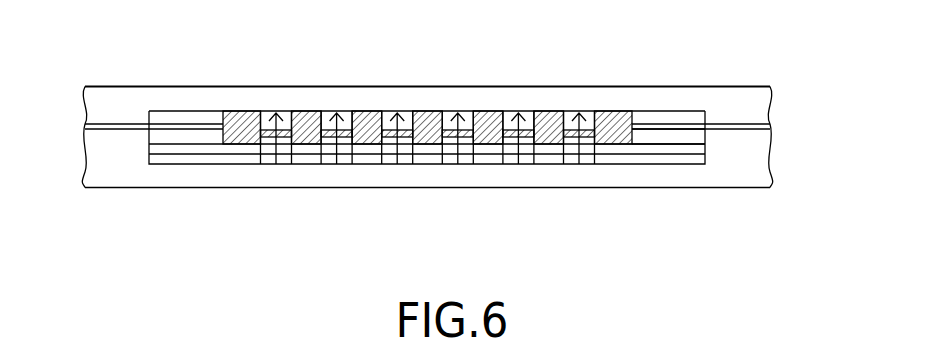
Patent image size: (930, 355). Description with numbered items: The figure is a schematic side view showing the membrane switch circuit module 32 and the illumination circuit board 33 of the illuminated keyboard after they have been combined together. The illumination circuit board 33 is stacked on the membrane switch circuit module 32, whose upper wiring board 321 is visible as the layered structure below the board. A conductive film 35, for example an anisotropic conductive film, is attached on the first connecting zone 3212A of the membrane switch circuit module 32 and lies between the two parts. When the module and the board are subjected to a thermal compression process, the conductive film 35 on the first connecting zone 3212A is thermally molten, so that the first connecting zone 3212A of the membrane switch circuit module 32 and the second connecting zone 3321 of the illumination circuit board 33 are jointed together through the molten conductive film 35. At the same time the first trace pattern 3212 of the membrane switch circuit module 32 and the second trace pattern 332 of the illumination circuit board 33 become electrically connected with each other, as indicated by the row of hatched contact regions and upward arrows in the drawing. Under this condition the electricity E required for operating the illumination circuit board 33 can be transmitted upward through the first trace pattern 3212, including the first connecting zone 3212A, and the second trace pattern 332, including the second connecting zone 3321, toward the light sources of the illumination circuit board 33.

The illumination circuit board 33 is at (746, 101).
The membrane switch circuit module 32 is at (746, 158).
The second connecting zone 3321 is at (655, 118).
The second trace pattern 332 is at (267, 109).
The conductive film 35 is at (615, 112).
The upper wiring board 321 is at (188, 149).
The first trace pattern 3212 is at (265, 162).
The first connecting zone 3212A is at (667, 137).
The electricity E is at (283, 143).